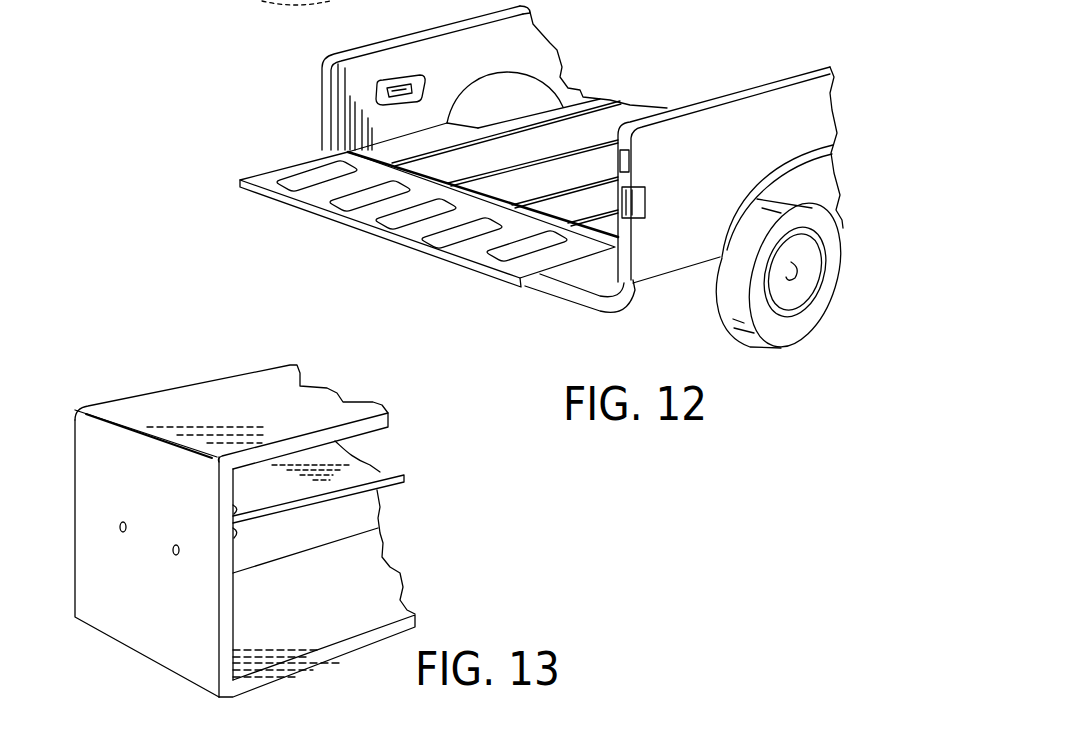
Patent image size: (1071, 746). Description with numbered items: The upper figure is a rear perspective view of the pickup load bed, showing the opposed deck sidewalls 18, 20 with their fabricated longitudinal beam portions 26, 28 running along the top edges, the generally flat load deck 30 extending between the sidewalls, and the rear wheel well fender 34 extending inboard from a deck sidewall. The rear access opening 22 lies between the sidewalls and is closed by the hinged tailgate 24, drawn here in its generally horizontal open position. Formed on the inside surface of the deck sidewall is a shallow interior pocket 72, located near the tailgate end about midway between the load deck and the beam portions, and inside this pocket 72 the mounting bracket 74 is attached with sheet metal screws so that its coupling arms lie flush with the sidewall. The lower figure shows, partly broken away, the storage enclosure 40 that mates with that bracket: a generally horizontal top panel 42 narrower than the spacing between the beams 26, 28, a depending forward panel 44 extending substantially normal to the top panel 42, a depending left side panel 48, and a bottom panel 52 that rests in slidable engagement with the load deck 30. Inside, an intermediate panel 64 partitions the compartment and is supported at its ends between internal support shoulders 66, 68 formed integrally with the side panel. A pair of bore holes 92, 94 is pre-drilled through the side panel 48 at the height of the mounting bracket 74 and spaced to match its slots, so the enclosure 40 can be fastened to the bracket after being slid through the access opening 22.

In FIG. 12, the deck sidewall 18 is at (791, 125).
In FIG. 12, the deck sidewall 20 is at (506, 48).
In FIG. 12, the rear access opening 22 is at (368, 134).
In FIG. 12, the tailgate 24 is at (357, 240).
In FIG. 12, the longitudinal beam portion 26 is at (726, 92).
In FIG. 12, the longitudinal beam portion 28 is at (402, 40).
In FIG. 12, the load deck 30 is at (594, 126).
In FIG. 12, the rear wheel well fender 34 is at (530, 97).
In FIG. 12, the interior pocket 72 is at (410, 80).
In FIG. 12, the mounting bracket 74 is at (403, 96).
In FIG. 13, the storage enclosure 40 is at (118, 368).
In FIG. 13, the top panel 42 is at (266, 412).
In FIG. 13, the depending forward panel 44 is at (360, 517).
In FIG. 13, the depending left side panel 48 is at (152, 630).
In FIG. 13, the bottom panel 52 is at (378, 597).
In FIG. 13, the intermediate panel 64 is at (367, 472).
In FIG. 13, the internal support shoulder 66 is at (234, 534).
In FIG. 13, the internal support shoulder 68 is at (233, 510).
In FIG. 13, the bore hole 92 is at (173, 553).
In FIG. 13, the bore hole 94 is at (118, 528).